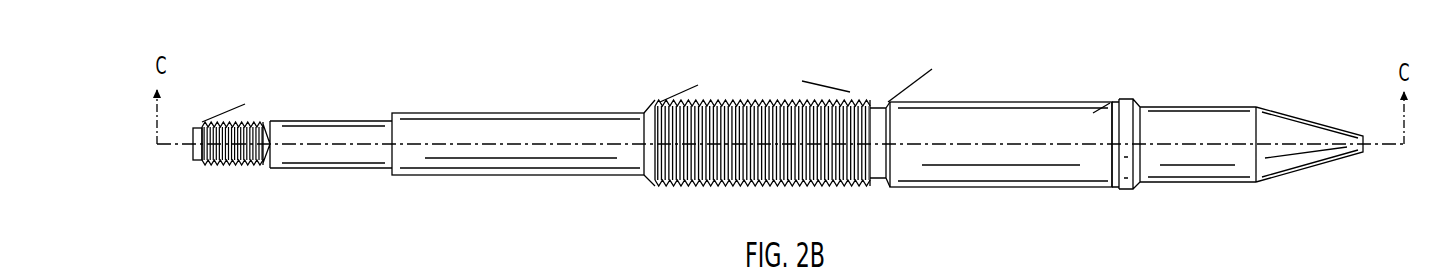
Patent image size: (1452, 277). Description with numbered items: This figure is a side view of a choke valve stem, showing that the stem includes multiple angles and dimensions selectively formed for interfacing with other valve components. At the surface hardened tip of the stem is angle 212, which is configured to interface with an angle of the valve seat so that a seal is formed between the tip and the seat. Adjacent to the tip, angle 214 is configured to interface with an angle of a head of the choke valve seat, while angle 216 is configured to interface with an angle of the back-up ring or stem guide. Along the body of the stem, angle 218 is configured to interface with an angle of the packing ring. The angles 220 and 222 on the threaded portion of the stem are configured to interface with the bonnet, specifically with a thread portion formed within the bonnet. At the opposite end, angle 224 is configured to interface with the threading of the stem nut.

The angle 212 is at (1275, 138).
The angle 214 is at (1127, 138).
The angle 216 is at (1108, 138).
The angle 218 is at (939, 99).
The angle 220 is at (798, 138).
The angle 222 is at (701, 138).
The angle 224 is at (245, 138).